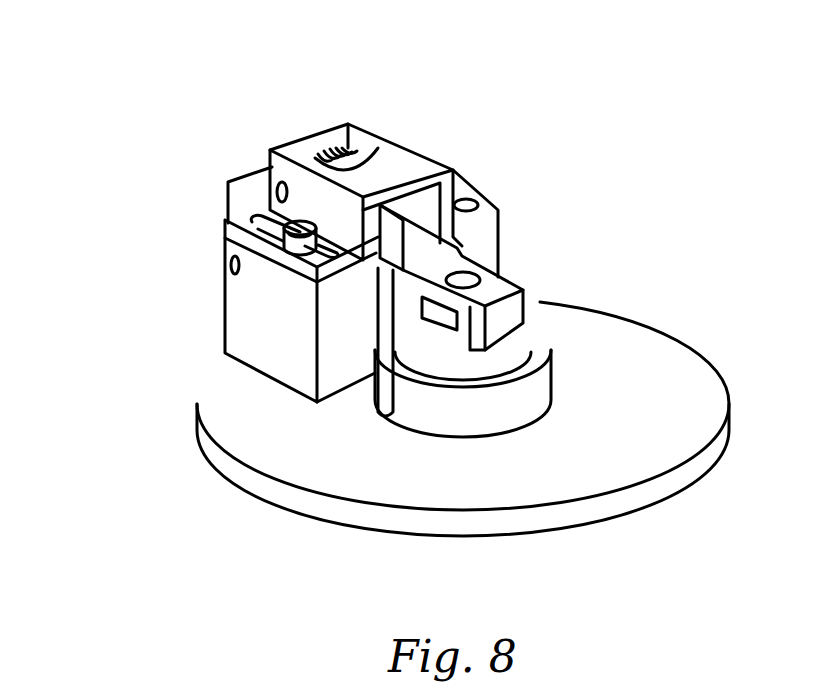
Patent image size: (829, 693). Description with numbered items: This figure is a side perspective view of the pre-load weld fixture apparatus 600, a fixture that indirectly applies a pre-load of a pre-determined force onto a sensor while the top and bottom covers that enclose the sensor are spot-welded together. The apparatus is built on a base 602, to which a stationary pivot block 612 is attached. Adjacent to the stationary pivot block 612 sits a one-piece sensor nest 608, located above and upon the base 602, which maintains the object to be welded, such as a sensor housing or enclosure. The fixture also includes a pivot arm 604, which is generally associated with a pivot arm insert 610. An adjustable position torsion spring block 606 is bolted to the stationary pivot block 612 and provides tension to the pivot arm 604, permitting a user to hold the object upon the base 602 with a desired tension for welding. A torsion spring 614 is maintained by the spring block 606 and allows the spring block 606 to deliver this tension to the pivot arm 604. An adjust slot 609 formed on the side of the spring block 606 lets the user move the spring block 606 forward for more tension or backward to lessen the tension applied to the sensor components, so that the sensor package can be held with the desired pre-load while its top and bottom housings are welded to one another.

The pre-load weld fixture apparatus 600 is at (114, 95).
The base 602 is at (649, 354).
The pivot arm 604 is at (240, 174).
The adjustable position torsion spring block 606 is at (412, 163).
The one-piece sensor nest 608 is at (517, 403).
The adjust slot 609 is at (244, 186).
The pivot arm insert 610 is at (393, 412).
The stationary pivot block 612 is at (242, 305).
The torsion spring 614 is at (330, 152).